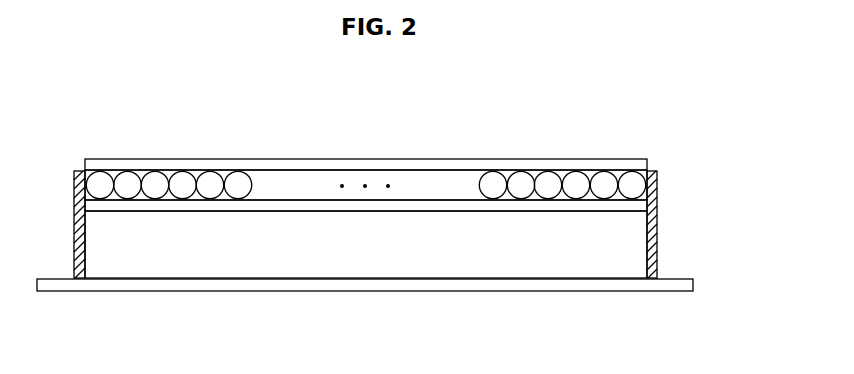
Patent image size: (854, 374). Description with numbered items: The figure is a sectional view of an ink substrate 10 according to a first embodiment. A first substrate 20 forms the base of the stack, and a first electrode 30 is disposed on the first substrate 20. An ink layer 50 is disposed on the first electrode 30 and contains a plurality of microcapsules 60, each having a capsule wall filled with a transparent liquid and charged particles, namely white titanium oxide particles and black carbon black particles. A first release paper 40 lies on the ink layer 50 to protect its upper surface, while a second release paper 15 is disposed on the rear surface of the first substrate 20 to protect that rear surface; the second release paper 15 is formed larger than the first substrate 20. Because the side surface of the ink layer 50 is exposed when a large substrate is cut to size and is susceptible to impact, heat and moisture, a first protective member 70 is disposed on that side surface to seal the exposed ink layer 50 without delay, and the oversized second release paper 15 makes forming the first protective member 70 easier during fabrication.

The ink substrate 10 is at (74, 111).
The second release paper 15 is at (537, 283).
The first substrate 20 is at (335, 262).
The first electrode 30 is at (454, 205).
The first release paper 40 is at (379, 167).
The ink layer 50 is at (446, 172).
The microcapsules 60 is at (242, 182).
The first protective member 70 is at (656, 228).